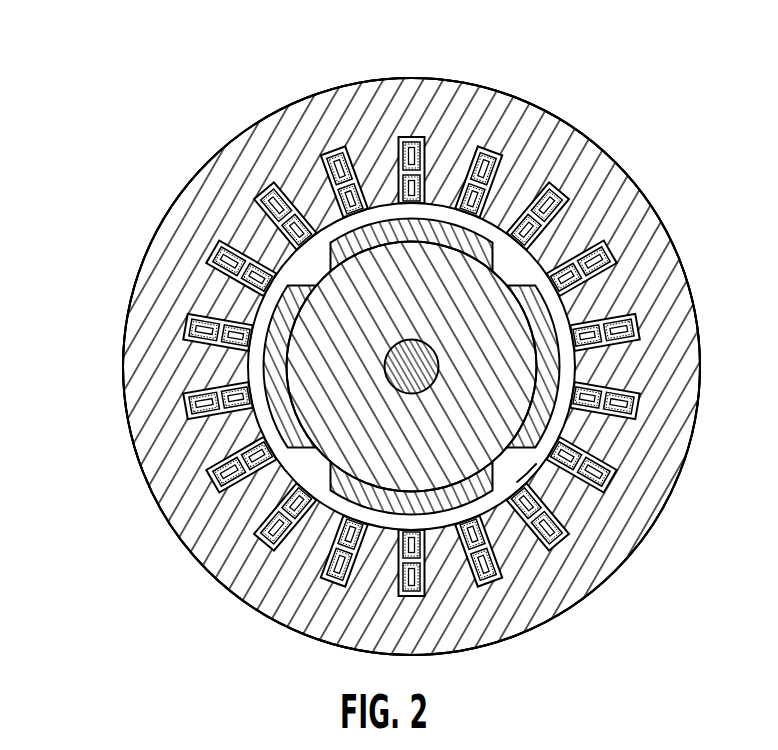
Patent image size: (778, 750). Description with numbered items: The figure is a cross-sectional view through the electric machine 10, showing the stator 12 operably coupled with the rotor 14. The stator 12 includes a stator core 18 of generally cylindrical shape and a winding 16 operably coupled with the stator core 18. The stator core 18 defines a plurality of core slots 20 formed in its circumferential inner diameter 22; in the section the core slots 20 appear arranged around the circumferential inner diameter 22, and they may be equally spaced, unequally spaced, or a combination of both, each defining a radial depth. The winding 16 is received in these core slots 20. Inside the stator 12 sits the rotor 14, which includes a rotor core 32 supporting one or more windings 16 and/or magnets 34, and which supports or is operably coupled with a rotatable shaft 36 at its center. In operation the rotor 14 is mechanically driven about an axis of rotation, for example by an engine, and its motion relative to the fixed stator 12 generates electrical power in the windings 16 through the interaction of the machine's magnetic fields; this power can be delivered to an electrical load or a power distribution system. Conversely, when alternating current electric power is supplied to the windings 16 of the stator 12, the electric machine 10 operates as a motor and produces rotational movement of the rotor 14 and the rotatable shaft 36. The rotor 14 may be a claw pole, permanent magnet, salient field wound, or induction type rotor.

The electric machine 10 is at (238, 65).
The stator 12 is at (592, 162).
The rotor 14 is at (508, 413).
The winding 16 is at (600, 256).
The stator core 18 is at (647, 200).
The core slot 20 is at (487, 152).
The circumferential inner diameter 22 is at (542, 473).
The rotor core 32 is at (520, 366).
The magnet 34 is at (546, 309).
The rotatable shaft 36 is at (400, 369).